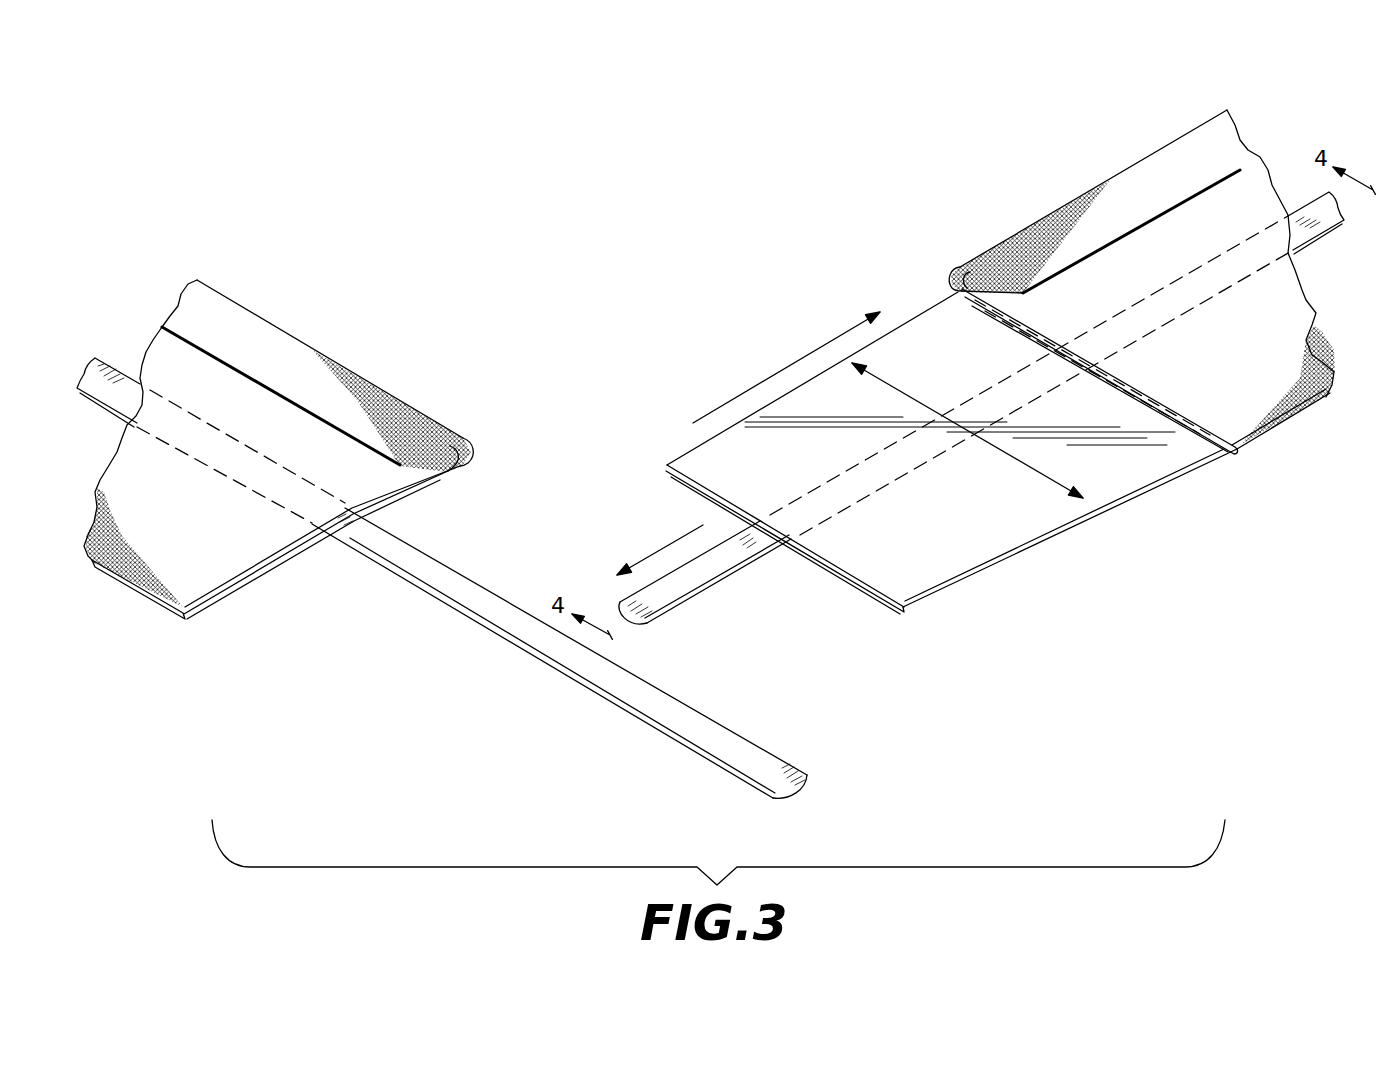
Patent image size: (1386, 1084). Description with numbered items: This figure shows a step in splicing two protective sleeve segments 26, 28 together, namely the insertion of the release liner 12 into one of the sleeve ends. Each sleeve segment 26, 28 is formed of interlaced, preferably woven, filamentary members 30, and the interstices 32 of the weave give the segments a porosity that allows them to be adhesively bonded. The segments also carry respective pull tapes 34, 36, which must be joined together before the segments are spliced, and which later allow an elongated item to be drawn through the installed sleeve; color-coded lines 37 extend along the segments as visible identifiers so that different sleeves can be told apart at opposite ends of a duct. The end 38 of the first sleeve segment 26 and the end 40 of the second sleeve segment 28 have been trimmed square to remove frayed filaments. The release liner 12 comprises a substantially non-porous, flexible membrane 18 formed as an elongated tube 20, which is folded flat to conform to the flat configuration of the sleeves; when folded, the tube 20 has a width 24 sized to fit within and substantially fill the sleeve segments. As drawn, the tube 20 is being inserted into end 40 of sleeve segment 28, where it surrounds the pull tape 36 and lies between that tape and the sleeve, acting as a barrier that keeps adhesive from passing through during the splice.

The release liner 12 is at (945, 555).
The flexible membrane 18 is at (820, 469).
The elongated tube 20 is at (690, 480).
The width 24 is at (1027, 470).
The sleeve segment 26 is at (200, 297).
The sleeve segment 28 is at (1203, 163).
The filamentary members 30 is at (100, 480).
The interstices 32 is at (118, 537).
The pull tape 34 is at (733, 753).
The pull tape 36 is at (687, 580).
The color-coded lines 37 is at (280, 393).
The end 38 is at (213, 608).
The end 40 is at (1213, 446).